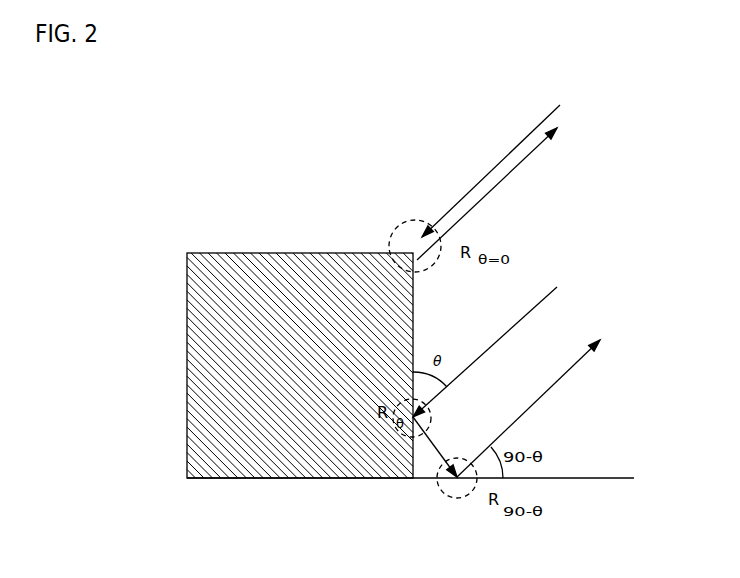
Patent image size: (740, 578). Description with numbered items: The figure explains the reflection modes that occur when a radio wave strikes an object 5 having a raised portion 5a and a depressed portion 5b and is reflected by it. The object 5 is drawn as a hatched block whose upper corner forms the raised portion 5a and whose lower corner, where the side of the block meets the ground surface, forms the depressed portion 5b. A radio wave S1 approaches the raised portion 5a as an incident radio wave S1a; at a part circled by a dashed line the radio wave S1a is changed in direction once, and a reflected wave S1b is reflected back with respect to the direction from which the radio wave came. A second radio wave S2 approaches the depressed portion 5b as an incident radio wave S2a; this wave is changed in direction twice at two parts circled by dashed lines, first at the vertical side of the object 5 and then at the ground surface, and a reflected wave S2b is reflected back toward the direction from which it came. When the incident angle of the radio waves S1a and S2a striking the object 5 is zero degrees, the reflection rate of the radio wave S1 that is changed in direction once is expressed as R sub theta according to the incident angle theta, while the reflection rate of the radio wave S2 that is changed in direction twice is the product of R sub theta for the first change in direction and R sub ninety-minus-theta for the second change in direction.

The object 5 is at (232, 240).
The raised portion 5a is at (413, 252).
The depressed portion 5b is at (425, 465).
The radio wave S1 is at (529, 170).
The radio wave S1a is at (505, 164).
The reflected wave S1b is at (503, 190).
The radio wave S2 is at (532, 366).
The radio wave S2a is at (499, 376).
The reflected wave S2b is at (545, 406).